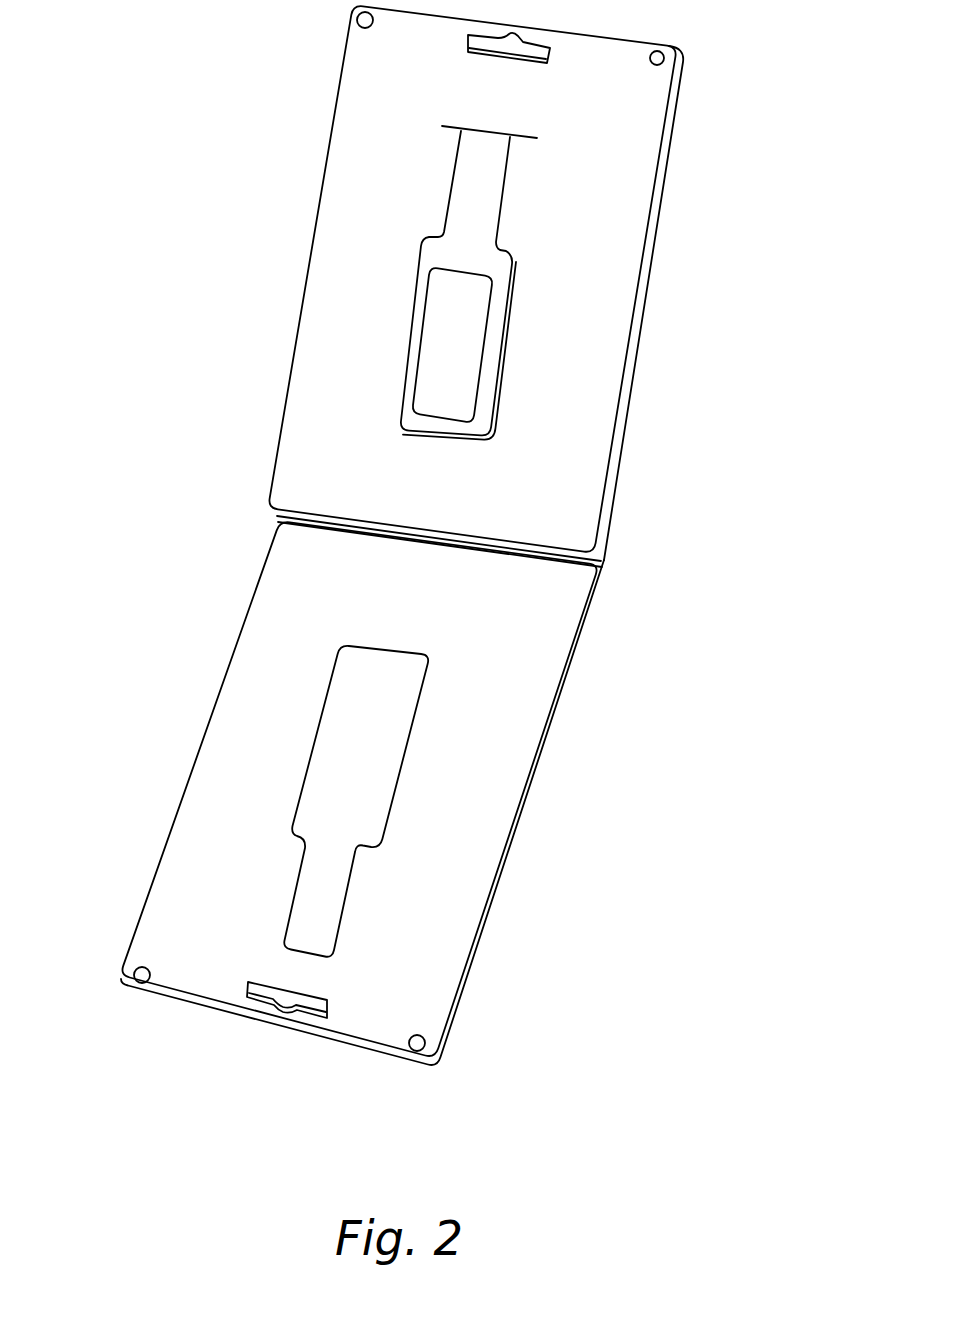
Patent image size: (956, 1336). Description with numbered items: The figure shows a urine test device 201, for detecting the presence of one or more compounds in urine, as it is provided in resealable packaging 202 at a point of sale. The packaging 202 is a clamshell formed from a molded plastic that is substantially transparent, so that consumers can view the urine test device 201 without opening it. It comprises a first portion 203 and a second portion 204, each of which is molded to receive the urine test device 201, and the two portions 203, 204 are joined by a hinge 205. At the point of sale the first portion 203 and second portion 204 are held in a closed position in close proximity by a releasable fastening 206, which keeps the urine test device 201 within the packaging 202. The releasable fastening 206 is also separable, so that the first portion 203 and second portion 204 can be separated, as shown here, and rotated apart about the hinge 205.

The urine test device 201 is at (502, 265).
The resealable packaging 202 is at (607, 440).
The first portion 203 is at (600, 482).
The second portion 204 is at (507, 805).
The hinge 205 is at (602, 562).
The releasable fastening 206 is at (664, 59).